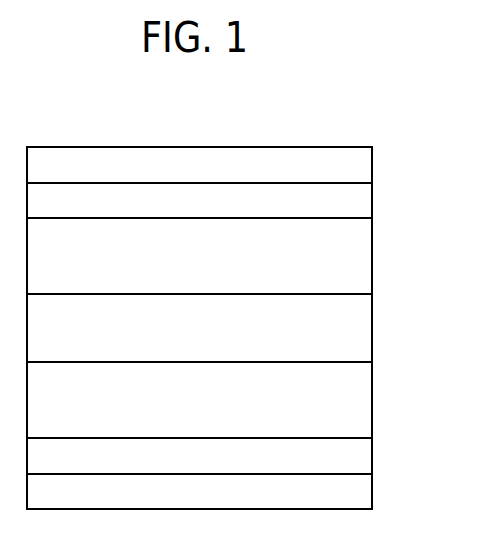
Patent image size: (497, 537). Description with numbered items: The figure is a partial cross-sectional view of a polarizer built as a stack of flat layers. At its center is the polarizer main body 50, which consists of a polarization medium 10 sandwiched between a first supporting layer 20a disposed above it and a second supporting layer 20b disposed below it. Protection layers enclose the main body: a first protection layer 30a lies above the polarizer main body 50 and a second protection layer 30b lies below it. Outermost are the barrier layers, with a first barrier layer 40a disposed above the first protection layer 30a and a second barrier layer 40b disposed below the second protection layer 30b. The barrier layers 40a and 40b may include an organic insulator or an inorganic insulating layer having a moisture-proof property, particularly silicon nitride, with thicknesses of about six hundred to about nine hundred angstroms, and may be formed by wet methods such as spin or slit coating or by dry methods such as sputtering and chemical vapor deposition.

The polarization medium 10 is at (355, 328).
The first supporting layer 20a is at (355, 258).
The second supporting layer 20b is at (355, 403).
The first protection layer 30a is at (355, 201).
The second protection layer 30b is at (355, 458).
The first barrier layer 40a is at (355, 163).
The second barrier layer 40b is at (355, 493).
The polarizer main body 50 is at (442, 250).